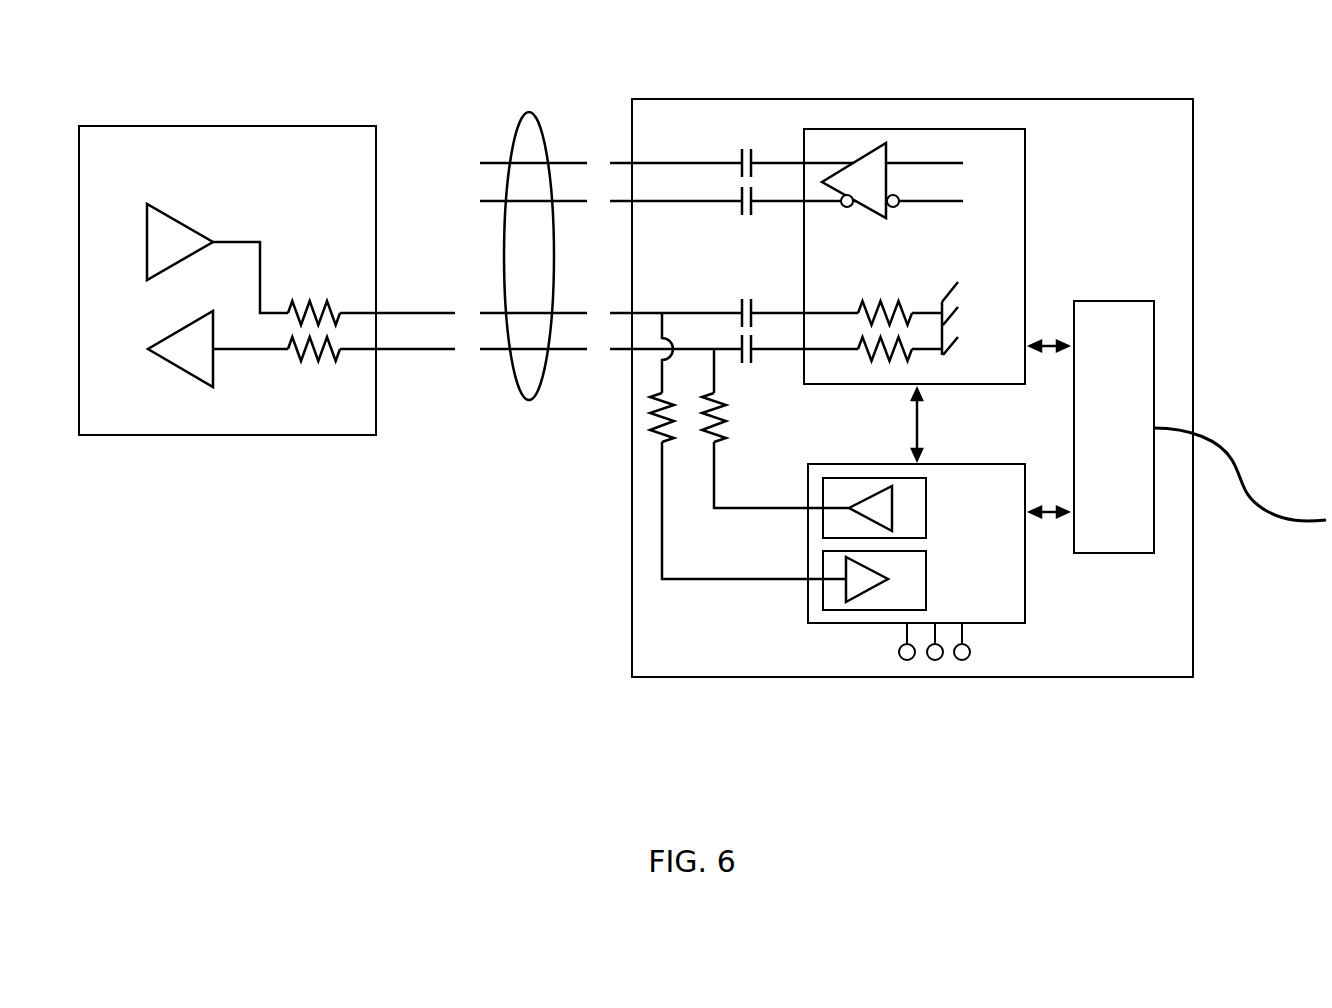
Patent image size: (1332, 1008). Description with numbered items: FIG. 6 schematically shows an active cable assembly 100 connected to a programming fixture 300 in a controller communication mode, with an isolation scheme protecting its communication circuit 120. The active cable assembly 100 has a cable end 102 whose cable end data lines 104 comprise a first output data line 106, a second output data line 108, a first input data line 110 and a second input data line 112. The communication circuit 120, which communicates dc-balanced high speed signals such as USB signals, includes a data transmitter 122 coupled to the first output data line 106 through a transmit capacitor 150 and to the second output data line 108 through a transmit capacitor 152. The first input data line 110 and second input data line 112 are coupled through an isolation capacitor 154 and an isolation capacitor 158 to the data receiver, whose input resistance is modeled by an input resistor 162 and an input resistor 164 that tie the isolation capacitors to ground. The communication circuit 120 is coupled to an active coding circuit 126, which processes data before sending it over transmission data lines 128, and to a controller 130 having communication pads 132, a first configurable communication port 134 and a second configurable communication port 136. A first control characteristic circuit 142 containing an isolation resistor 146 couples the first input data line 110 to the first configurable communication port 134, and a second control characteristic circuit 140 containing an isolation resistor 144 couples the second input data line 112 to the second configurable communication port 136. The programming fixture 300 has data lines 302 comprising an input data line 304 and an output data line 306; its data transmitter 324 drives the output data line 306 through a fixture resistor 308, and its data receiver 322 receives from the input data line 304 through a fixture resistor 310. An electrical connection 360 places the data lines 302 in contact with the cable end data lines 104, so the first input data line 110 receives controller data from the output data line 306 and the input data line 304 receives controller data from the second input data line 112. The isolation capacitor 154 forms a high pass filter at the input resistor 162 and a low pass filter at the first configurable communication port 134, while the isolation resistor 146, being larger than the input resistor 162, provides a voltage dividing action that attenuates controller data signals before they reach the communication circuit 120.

The active cable assembly 100 is at (948, 364).
The cable end 102 is at (940, 98).
The cable end data lines 104 is at (656, 215).
The first output data line 106 is at (649, 158).
The second output data line 108 is at (653, 204).
The first input data line 110 is at (644, 308).
The second input data line 112 is at (685, 345).
The communication circuit 120 is at (914, 276).
The data transmitter 122 is at (862, 212).
The active coding circuit 126 is at (1094, 432).
The transmission data lines 128 is at (1230, 448).
The controller 130 is at (916, 543).
The communication pads 132 is at (982, 656).
The first configurable communication port 134 is at (930, 580).
The second configurable communication port 136 is at (930, 506).
The second control characteristic circuit 140 is at (728, 478).
The first control characteristic circuit 142 is at (652, 500).
The isolation resistor 144 is at (724, 418).
The isolation resistor 146 is at (650, 425).
The transmit capacitor 150 is at (751, 150).
The transmit capacitor 152 is at (751, 214).
The isolation capacitor 154 is at (749, 300).
The isolation capacitor 158 is at (750, 362).
The input resistor 162 is at (873, 300).
The input resistor 164 is at (878, 364).
The programming fixture 300 is at (227, 246).
The data lines 302 is at (398, 361).
The input data line 304 is at (397, 375).
The output data line 306 is at (393, 309).
The fixture resistor 308 is at (312, 300).
The fixture resistor 310 is at (305, 362).
The data receiver 322 is at (160, 342).
The data transmitter 324 is at (178, 222).
The electrical connection 360 is at (529, 110).